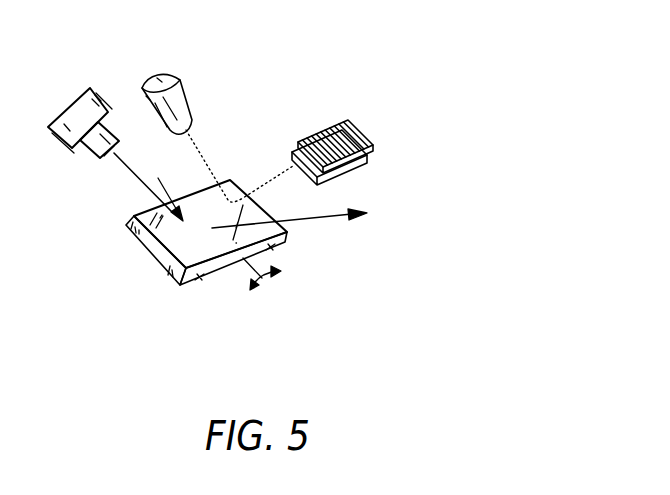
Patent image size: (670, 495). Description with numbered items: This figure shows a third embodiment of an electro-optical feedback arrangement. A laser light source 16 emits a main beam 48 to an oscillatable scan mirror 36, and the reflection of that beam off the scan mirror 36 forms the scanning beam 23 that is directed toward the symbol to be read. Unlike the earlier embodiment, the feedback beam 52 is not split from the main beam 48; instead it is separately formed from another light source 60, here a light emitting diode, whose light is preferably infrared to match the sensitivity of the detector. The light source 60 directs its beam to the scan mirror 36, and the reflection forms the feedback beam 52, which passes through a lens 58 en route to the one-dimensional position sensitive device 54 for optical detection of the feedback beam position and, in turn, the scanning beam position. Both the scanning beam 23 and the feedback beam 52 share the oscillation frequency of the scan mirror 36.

The laser 16 is at (60, 142).
The main beam 48 is at (123, 172).
The light source 60 is at (175, 88).
The scan mirror 36 is at (182, 242).
The feedback beam 52 is at (273, 180).
The scanning beam 23 is at (338, 222).
The lens 58 is at (348, 176).
The position sensitive device 54 is at (348, 135).